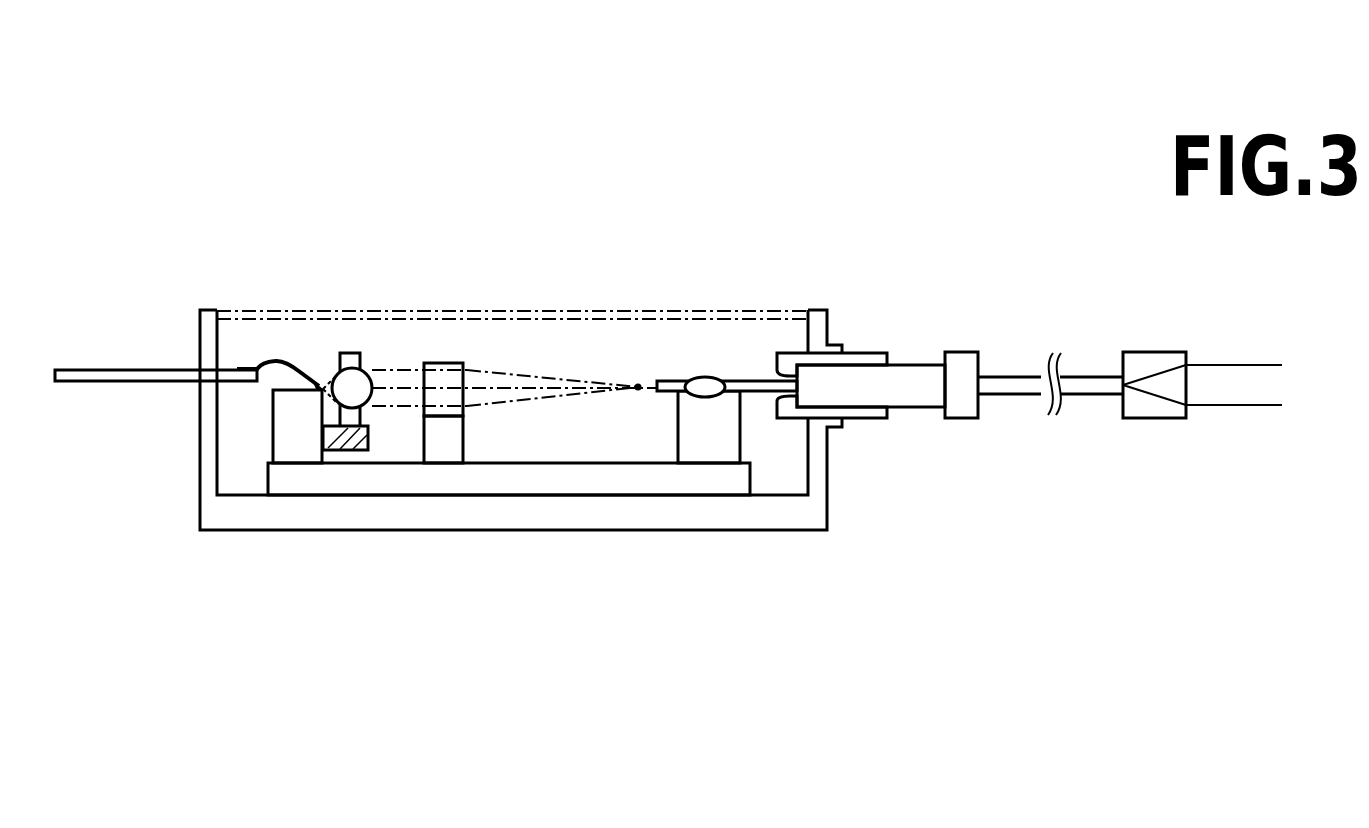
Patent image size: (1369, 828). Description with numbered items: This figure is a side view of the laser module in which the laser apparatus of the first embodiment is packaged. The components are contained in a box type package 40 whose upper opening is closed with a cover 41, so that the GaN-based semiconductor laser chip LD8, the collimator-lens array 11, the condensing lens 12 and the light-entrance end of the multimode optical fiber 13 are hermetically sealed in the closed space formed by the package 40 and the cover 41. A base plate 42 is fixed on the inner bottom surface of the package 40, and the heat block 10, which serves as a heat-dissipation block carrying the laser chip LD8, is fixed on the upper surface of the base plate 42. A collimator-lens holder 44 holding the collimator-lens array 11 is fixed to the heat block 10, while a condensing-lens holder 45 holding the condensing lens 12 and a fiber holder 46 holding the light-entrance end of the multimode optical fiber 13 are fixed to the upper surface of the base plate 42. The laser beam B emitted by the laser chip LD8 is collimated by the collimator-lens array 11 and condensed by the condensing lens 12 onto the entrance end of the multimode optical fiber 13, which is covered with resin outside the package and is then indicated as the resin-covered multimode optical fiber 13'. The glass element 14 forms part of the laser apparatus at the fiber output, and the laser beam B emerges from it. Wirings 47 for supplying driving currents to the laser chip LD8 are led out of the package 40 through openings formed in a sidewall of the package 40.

The heat block 10 is at (302, 453).
The collimator-lens array 11 is at (349, 353).
The condensing lens 12 is at (447, 380).
The multimode optical fiber 13 is at (801, 327).
The resin-covered multimode optical fiber 13' is at (1034, 344).
The glass element 14 is at (1153, 350).
The package 40 is at (540, 515).
The cover 41 is at (643, 308).
The base plate 42 is at (618, 482).
The collimator-lens holder 44 is at (345, 450).
The condensing-lens holder 45 is at (440, 447).
The fiber holder 46 is at (703, 452).
The wirings 47 is at (135, 372).
The GaN-based semiconductor laser chip LD8 is at (318, 380).
The laser beam B is at (515, 373).